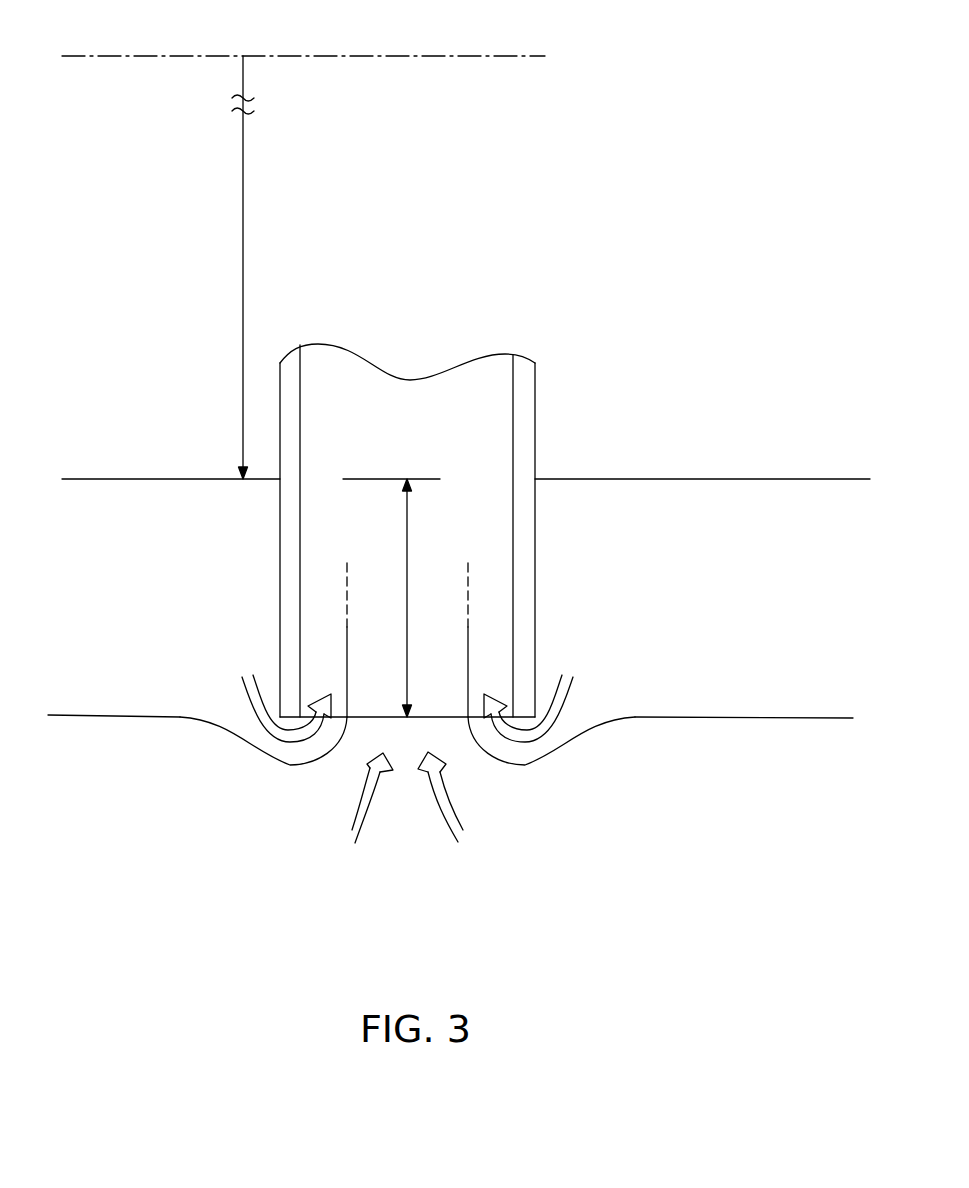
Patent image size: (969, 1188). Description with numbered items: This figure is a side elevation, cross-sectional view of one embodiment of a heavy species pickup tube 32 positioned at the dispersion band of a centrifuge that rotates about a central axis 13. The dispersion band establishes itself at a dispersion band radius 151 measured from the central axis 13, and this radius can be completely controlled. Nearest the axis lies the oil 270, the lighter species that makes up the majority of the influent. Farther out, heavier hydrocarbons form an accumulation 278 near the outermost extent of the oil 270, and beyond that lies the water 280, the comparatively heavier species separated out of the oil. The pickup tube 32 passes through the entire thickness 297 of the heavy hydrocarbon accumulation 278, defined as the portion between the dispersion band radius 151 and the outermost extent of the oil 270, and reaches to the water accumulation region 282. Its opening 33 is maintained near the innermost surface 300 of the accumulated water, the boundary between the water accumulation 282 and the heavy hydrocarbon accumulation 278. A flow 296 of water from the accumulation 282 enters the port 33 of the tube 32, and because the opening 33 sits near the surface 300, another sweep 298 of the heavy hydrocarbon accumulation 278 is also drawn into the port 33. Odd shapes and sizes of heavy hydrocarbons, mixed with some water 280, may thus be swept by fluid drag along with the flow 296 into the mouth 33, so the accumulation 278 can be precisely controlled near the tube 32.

The central axis 13 is at (146, 57).
The dispersion band radius 151 is at (243, 211).
The oil layer 270 is at (151, 422).
The heavy hydrocarbon accumulation 278 is at (151, 556).
The water layer 280 is at (145, 888).
The water accumulation region 282 is at (221, 783).
The pickup tube 32 is at (287, 610).
The thickness of the heavy hydrocarbon accumulation 297 is at (407, 519).
The opening 33 is at (447, 732).
The sweep 298 is at (247, 690).
The flow of water 296 is at (367, 812).
The innermost surface of the water 300 is at (119, 732).